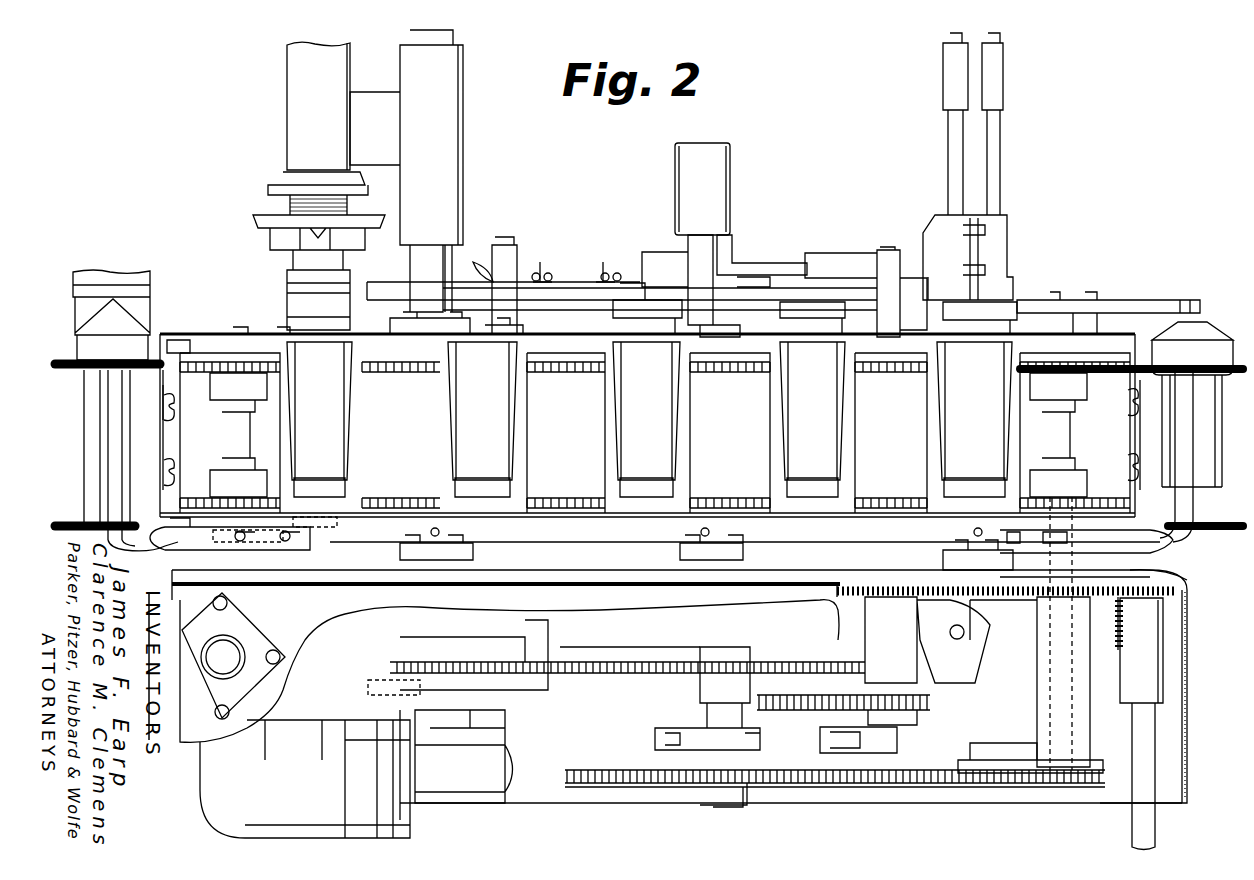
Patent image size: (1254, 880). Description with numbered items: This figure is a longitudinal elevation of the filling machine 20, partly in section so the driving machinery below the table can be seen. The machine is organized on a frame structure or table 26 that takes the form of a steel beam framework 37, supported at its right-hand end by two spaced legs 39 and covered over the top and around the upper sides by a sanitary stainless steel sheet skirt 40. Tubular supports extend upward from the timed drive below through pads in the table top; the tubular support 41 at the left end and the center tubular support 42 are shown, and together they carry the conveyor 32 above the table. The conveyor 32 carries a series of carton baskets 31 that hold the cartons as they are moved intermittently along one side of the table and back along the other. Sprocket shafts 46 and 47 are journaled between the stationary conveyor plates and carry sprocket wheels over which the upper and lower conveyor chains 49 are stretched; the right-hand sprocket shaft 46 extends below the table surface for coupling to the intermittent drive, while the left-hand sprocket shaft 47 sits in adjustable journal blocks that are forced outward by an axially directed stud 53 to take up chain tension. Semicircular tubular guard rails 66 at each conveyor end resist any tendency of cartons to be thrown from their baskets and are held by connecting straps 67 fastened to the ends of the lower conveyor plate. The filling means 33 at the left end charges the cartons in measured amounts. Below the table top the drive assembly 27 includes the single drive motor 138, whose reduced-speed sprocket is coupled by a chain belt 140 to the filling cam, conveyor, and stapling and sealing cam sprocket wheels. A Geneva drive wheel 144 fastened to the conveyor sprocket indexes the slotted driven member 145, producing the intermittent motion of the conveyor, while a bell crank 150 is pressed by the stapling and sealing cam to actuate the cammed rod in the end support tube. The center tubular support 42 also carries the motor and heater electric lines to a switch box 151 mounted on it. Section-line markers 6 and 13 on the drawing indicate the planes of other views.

The section line 6- 6 is at (265, 143).
The section line 13- 13 is at (325, 605).
The filling machine 20 is at (1079, 172).
The frame structure or table 26 is at (1185, 575).
The drive assembly 27 is at (562, 791).
The carton basket 31 is at (940, 433).
The machine conveyor 32 is at (1134, 441).
The filling means 33 is at (274, 123).
The steel beam framework 37 is at (1133, 577).
The legs 39 is at (1157, 836).
The stainless steel sheet skirt 40 is at (1191, 690).
The tubular support 41 is at (453, 262).
The tubular support 42 is at (698, 278).
The sprocket shaft 46 is at (1060, 432).
The sprocket shaft 47 is at (232, 433).
The conveyor chains 49 is at (725, 497).
The stud 53 is at (325, 532).
The guard rails 66 is at (66, 378).
The connecting straps 67 is at (175, 539).
The drive motor 138 is at (300, 800).
The chain belt 140 is at (630, 670).
The Geneva drive wheel 144 is at (895, 742).
The driven member of the Geneva movement 145 is at (685, 728).
The bell crank 150 is at (963, 662).
The switch box 151 is at (722, 178).